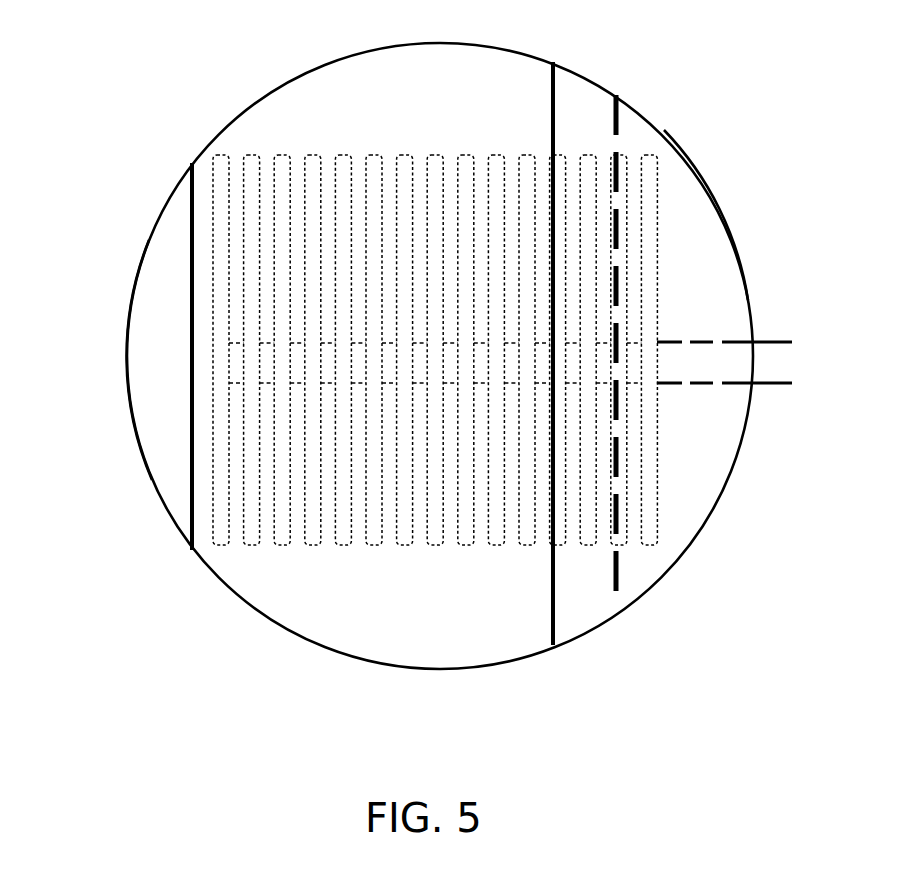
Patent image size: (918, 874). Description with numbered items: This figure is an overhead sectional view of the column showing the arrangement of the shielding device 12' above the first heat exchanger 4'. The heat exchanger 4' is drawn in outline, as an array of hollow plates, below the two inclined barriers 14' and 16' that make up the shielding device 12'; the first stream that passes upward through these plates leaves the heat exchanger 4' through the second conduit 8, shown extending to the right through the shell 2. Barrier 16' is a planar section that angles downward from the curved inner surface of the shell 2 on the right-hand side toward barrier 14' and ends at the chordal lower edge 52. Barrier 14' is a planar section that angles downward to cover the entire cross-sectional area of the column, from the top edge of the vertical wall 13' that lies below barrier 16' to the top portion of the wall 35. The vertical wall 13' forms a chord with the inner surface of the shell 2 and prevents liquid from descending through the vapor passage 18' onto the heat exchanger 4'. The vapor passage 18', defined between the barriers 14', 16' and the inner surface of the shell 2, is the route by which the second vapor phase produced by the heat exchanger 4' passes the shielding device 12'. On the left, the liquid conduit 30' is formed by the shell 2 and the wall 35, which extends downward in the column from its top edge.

The shell 2 is at (657, 123).
The first heat exchanger 4' is at (470, 280).
The second conduit 8 is at (765, 342).
The shielding device 12' is at (111, 356).
The vertical wall 13' is at (696, 381).
The barrier 14' is at (374, 330).
The barrier 16' is at (630, 350).
The vapor passage 18' is at (740, 215).
The liquid conduit 30' is at (110, 361).
The wall 35 is at (192, 310).
The chordal lower edge 52 is at (553, 605).